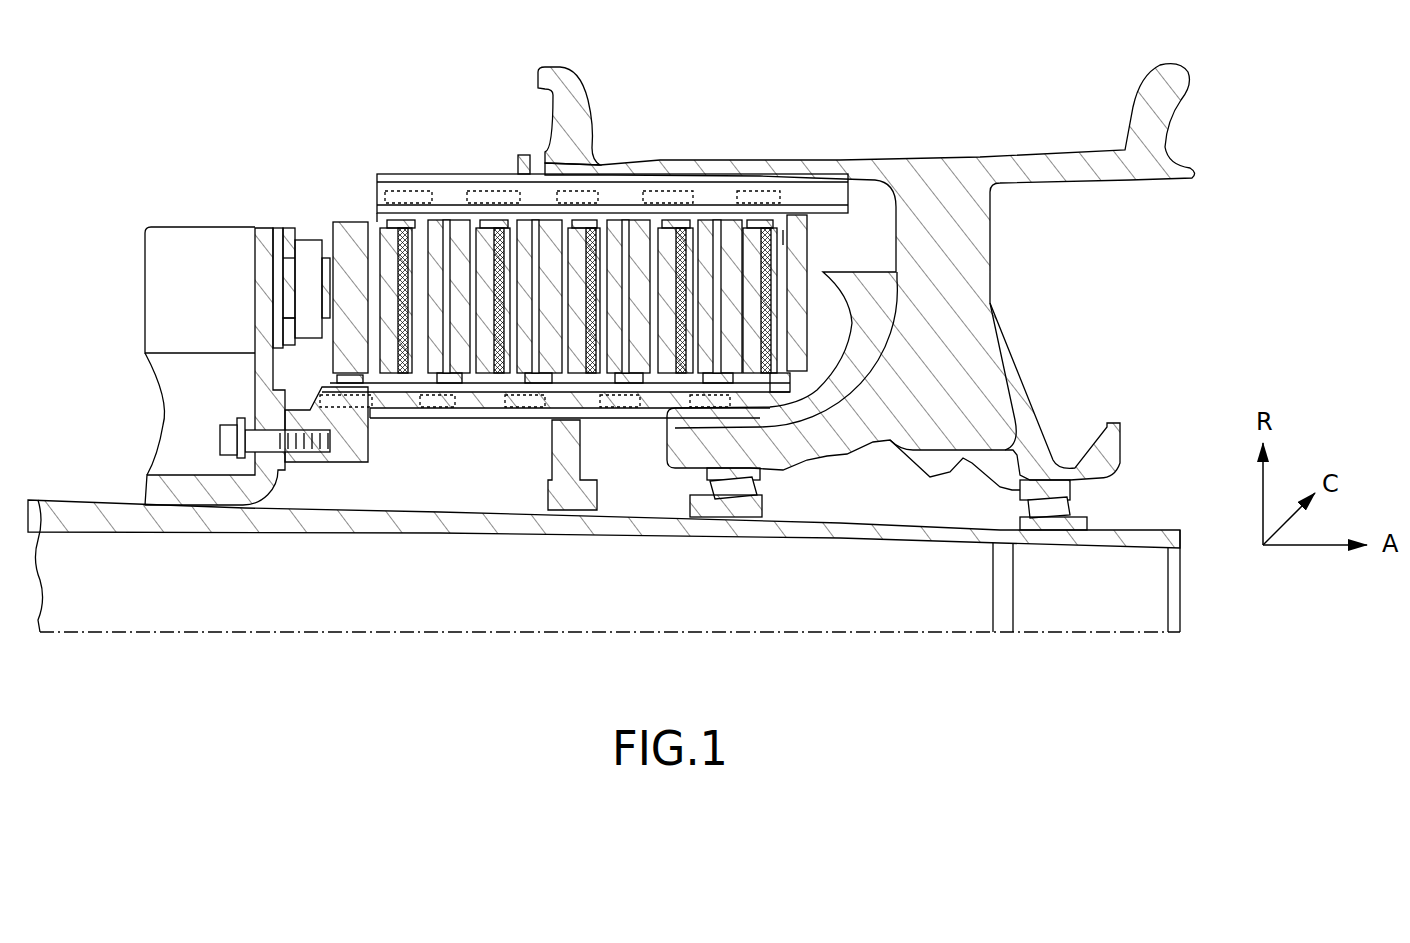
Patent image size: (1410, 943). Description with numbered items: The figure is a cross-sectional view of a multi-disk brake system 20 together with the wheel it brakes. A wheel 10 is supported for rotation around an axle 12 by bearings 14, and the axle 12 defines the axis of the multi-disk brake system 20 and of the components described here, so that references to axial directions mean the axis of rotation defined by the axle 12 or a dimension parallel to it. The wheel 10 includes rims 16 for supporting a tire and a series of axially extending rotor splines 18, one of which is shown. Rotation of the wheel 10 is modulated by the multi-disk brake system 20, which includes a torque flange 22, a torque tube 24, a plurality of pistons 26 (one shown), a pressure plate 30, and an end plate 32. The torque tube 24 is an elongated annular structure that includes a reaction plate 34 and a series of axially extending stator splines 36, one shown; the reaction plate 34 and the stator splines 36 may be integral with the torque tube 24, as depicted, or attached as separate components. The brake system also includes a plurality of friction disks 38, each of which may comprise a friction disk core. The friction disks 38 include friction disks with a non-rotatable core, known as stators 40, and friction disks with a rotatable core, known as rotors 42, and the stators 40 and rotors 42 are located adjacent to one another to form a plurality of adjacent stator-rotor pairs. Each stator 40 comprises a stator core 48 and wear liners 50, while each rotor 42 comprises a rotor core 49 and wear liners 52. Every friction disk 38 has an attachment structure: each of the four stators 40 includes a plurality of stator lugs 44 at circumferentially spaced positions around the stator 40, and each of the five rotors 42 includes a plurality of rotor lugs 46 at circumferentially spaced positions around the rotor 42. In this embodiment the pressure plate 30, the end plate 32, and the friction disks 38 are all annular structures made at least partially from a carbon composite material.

The wheel 10 is at (1000, 135).
The axle 12 is at (900, 527).
The bearings 14 is at (745, 493).
The rims 16 is at (582, 88).
The rotor splines 18 is at (528, 175).
The multi-disk brake system 20 is at (250, 112).
The torque flange 22 is at (254, 402).
The torque tube 24 is at (440, 420).
The pistons 26 is at (310, 245).
The pressure plate 30 is at (348, 222).
The end plate 32 is at (803, 212).
The reaction plate 34 is at (843, 350).
The stator splines 36 is at (503, 403).
The friction disks 38 is at (368, 214).
The stator 40 is at (460, 400).
The rotor 42 is at (400, 212).
The stator lugs 44 is at (683, 397).
The rotor lugs 46 is at (657, 195).
The stator core 48 is at (722, 270).
The rotor core 49 is at (763, 303).
The wear liners 50 is at (733, 222).
The wear liners 52 is at (783, 230).